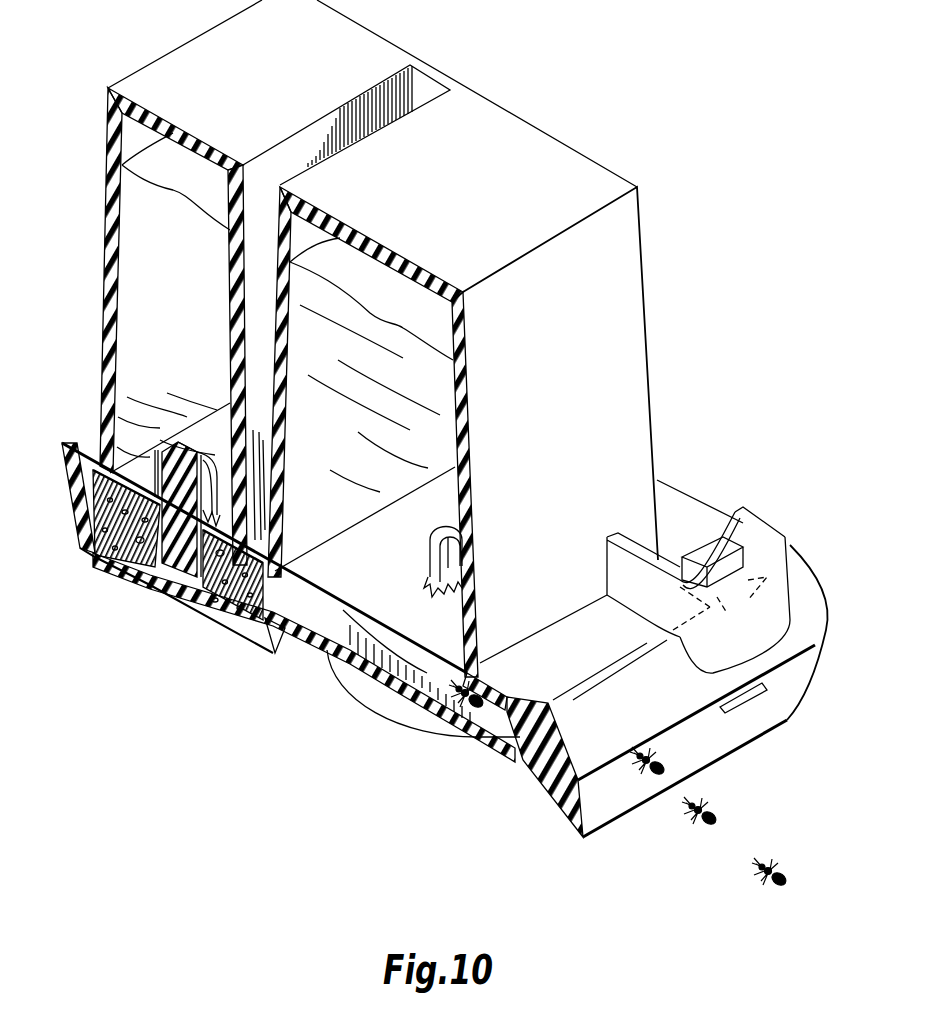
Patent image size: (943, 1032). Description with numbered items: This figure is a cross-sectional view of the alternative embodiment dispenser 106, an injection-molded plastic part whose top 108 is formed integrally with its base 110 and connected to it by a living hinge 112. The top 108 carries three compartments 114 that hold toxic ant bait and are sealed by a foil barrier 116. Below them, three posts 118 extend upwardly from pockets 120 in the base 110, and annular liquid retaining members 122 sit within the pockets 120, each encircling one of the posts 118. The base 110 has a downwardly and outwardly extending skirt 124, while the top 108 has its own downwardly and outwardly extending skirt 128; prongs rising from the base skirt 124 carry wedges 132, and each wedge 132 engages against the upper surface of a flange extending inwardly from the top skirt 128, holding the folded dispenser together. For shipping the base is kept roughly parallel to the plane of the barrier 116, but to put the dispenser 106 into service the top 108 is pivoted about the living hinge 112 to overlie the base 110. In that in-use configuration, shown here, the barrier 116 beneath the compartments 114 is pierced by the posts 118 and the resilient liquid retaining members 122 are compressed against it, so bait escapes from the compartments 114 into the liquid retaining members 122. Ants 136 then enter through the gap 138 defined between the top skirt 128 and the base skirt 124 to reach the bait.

The dispenser 106 is at (583, 88).
The top 108 is at (617, 170).
The base 110 is at (680, 490).
The living hinge 112 is at (58, 443).
The compartments 114 is at (117, 297).
The foil barrier 116 is at (313, 587).
The posts 118 is at (445, 513).
The pockets 120 is at (230, 603).
The annular liquid retaining members 122 is at (123, 567).
The base skirt 124 is at (540, 787).
The top skirt 128 is at (600, 777).
The wedge 132 is at (748, 537).
The ants 136 is at (782, 853).
The gap 138 is at (717, 710).